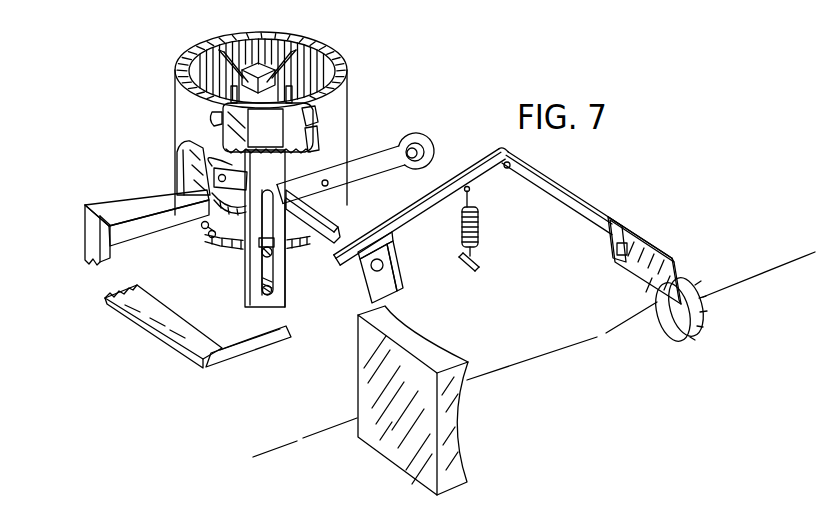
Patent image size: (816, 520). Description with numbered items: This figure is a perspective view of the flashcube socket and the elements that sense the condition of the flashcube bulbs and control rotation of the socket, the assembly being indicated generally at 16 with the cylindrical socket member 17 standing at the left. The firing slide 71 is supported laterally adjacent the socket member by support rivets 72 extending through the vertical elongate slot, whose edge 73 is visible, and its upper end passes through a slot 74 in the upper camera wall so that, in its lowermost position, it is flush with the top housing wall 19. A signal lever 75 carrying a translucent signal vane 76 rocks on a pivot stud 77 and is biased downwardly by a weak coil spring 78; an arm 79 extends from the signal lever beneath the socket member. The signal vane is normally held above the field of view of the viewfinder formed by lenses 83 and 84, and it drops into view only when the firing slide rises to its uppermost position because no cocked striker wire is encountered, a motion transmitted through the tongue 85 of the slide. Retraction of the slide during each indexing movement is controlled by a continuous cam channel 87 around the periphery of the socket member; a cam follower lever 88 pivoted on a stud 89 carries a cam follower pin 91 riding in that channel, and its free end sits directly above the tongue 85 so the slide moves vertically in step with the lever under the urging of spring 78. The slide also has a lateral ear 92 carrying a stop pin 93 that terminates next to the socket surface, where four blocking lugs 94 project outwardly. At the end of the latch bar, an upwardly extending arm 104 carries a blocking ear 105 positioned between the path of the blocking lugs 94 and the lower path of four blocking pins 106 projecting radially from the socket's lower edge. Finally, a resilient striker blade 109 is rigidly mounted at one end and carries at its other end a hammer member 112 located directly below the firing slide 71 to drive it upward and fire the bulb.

The hold-down assembly 16 is at (372, 462).
The cylindrical housing 17 is at (347, 87).
The top housing wall 19 is at (220, 117).
The firing slide 71 is at (303, 122).
The support rivets 72 is at (263, 258).
The bar edge 73 is at (273, 276).
The slot 74 is at (225, 136).
The signal lever 75 is at (435, 212).
The translucent signal vane 76 is at (648, 256).
The pivot stud 77 is at (386, 294).
The weak coil spring 78 is at (482, 237).
The arm 79 is at (283, 271).
The viewfinder lens 83 is at (462, 394).
The viewfinder lens 84 is at (682, 332).
The tongue 85 is at (342, 221).
The continuous cam channel 87 is at (178, 168).
The cam follower lever 88 is at (376, 156).
The stud 89 is at (432, 153).
The cam follower pin 91 is at (308, 141).
The lateral ear 92 is at (265, 228).
The stop pin 93 is at (180, 188).
The blocking lugs 94 is at (213, 234).
The upwardly extending arm 104 is at (85, 228).
The blocking ear 105 is at (128, 228).
The blocking pins 106 is at (201, 226).
The resilient striker blade 109 is at (160, 321).
The hammer member 112 is at (258, 352).